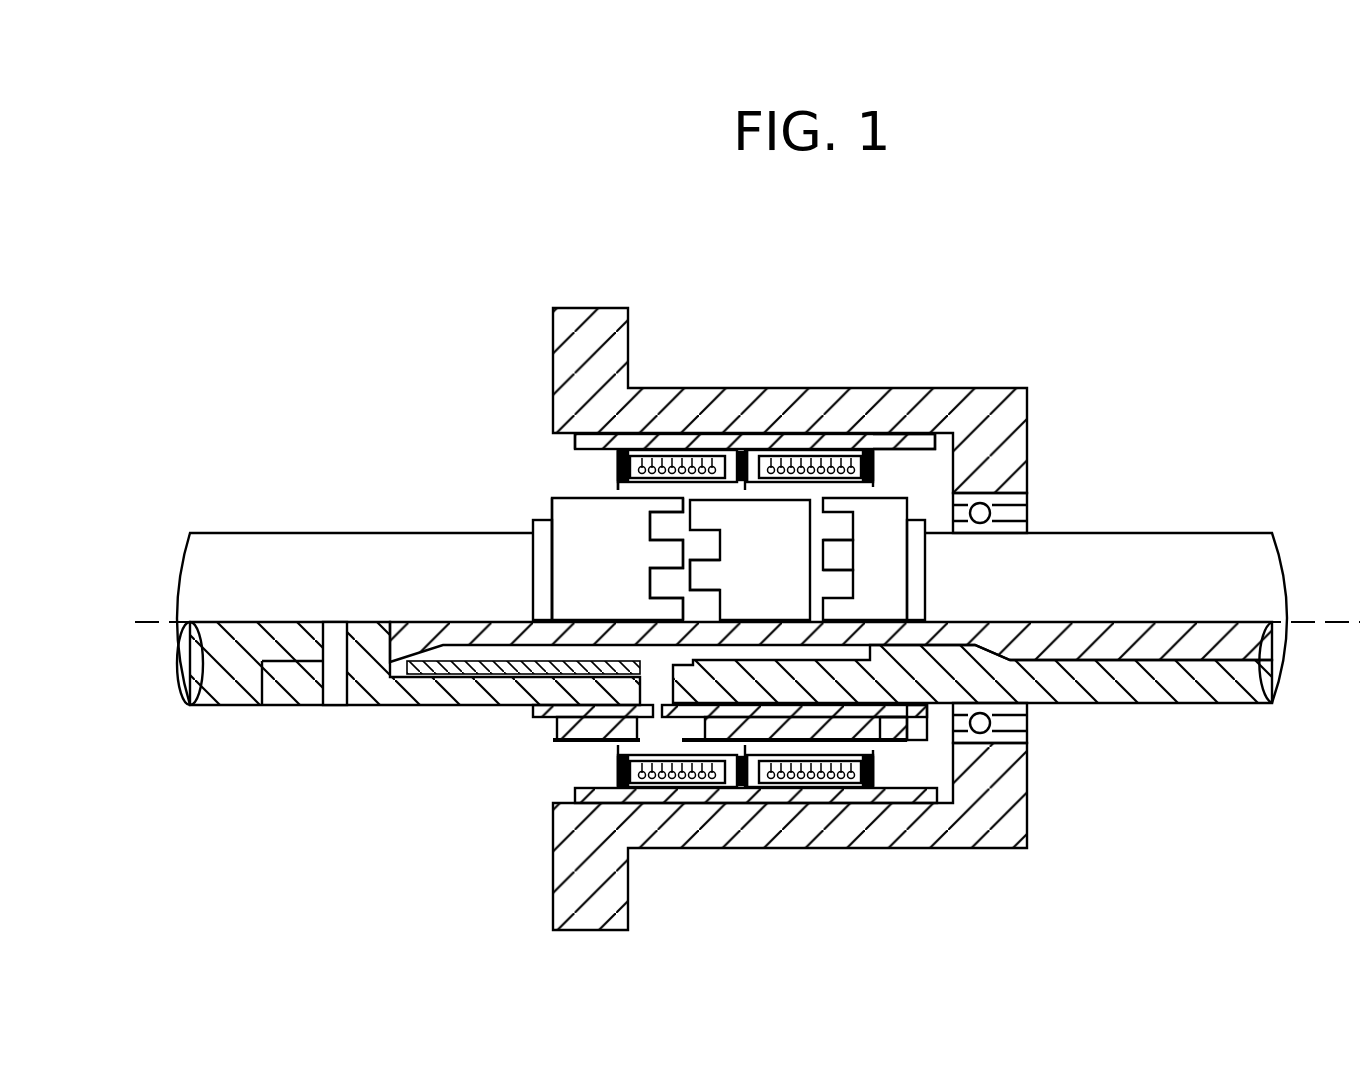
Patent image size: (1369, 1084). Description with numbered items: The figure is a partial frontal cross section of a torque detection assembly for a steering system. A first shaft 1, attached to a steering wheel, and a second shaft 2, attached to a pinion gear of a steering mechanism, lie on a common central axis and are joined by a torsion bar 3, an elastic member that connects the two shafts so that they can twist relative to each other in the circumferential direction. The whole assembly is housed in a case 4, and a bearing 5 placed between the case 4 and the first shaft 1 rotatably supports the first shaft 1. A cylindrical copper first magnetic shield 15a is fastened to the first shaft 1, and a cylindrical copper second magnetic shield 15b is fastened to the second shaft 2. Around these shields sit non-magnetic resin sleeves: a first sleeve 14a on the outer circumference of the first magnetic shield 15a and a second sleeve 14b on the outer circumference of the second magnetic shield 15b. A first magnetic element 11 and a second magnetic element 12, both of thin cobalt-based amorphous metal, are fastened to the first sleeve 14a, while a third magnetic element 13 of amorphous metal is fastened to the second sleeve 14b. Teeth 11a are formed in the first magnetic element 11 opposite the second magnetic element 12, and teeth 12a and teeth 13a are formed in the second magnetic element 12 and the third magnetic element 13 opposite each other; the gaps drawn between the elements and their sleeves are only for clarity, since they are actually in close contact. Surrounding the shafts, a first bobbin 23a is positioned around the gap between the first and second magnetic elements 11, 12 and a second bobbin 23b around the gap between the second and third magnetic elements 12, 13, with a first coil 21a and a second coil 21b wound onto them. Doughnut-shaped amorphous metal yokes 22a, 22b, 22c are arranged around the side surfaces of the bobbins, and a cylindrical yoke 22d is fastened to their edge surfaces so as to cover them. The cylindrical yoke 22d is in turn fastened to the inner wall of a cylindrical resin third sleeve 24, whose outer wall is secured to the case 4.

The first shaft 1 is at (1213, 533).
The second shaft 2 is at (232, 543).
The torsion bar 3 is at (990, 653).
The case 4 is at (553, 332).
The bearing 5 is at (997, 524).
The first magnetic element 11 is at (893, 511).
The teeth 11a is at (843, 608).
The second magnetic element 12 is at (790, 508).
The teeth 12a is at (721, 570).
The third magnetic element 13 is at (565, 510).
The teeth 13a is at (663, 553).
The first sleeve 14a is at (905, 733).
The second sleeve 14b is at (567, 722).
The first magnetic shield 15a is at (912, 717).
The second magnetic shield 15b is at (537, 710).
The first coil 21a is at (866, 455).
The second coil 21b is at (632, 455).
The yoke 22a is at (880, 474).
The yoke 22b is at (594, 559).
The yoke 22c is at (607, 463).
The cylindrical yoke 22d is at (575, 445).
The first bobbin 23a is at (878, 461).
The second bobbin 23b is at (676, 465).
The third sleeve 24 is at (913, 433).